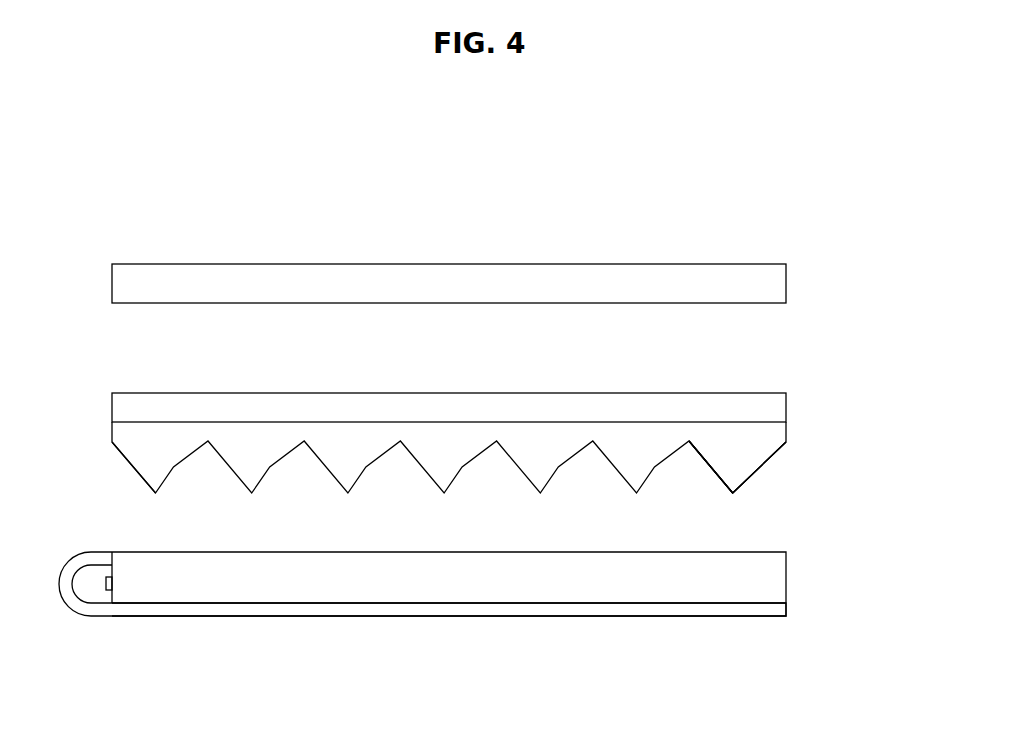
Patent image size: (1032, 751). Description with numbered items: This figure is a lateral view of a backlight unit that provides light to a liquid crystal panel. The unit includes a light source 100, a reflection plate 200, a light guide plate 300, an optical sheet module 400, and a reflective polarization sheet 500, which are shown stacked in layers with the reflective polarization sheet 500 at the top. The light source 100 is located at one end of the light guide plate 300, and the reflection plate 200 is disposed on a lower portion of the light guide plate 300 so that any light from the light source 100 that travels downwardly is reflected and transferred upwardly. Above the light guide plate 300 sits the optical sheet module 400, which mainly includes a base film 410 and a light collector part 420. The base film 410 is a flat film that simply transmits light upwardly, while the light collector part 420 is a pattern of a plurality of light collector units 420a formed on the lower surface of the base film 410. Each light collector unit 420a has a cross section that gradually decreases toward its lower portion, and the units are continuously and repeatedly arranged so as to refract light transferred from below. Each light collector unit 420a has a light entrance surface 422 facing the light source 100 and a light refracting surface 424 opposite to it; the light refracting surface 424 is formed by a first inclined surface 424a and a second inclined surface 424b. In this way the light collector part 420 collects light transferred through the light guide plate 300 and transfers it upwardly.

The light source 100 is at (103, 587).
The reflection plate 200 is at (470, 616).
The light guide plate 300 is at (776, 580).
The optical sheet module 400 is at (475, 433).
The base film 410 is at (775, 410).
The light collector part 420 is at (778, 438).
The light collector unit 420a is at (130, 468).
The light entrance surface 422 is at (708, 467).
The light refracting surface 424 is at (880, 470).
The first inclined surface 424a is at (742, 484).
The second inclined surface 424b is at (768, 453).
The reflective polarization sheet 500 is at (775, 285).